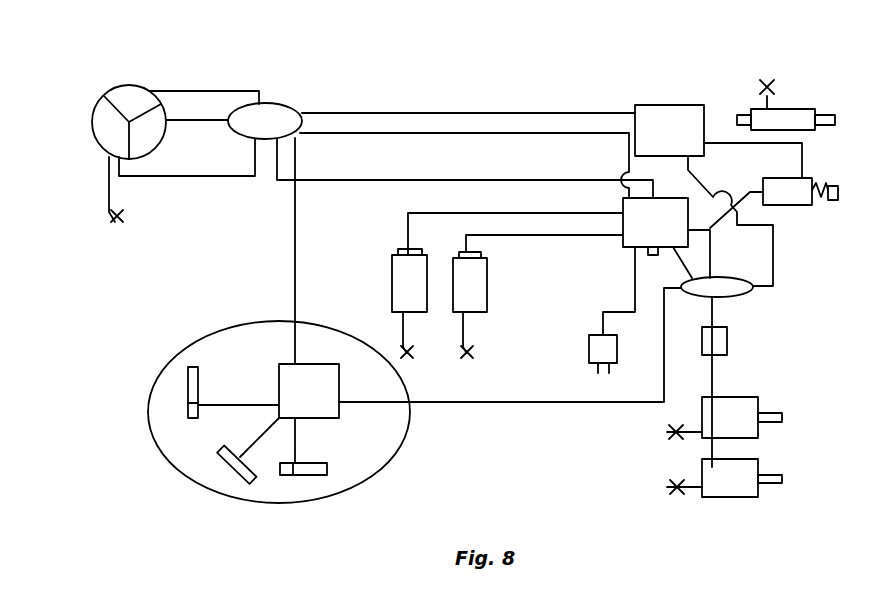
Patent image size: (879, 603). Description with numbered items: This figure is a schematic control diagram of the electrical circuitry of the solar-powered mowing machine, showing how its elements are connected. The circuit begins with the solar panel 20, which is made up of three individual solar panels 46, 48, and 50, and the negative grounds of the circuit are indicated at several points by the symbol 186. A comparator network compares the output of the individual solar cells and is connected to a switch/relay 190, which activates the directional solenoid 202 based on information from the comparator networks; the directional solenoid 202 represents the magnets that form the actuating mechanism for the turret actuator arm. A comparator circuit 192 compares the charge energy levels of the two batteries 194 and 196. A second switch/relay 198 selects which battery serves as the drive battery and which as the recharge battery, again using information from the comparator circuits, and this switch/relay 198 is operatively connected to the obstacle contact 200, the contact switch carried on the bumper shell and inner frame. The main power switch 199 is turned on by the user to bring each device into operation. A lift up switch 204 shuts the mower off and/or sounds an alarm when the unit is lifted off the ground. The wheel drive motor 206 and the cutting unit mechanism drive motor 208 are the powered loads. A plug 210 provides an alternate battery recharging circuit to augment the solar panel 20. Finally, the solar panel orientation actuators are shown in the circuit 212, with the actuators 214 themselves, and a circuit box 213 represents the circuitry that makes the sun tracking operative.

The solar panel 20 is at (108, 93).
The individual solar panel 48 is at (130, 96).
The individual solar panel 46 is at (103, 128).
The individual solar panel 50 is at (148, 137).
The negative ground 186 is at (276, 113).
The switch/relay 190 is at (648, 104).
The directional solenoid 202 is at (795, 108).
The obstacle contact 200 is at (790, 205).
The switch/relay 198 is at (623, 208).
The main power switch 199 is at (672, 283).
The comparator circuit 192 is at (742, 295).
The lift up switch 204 is at (727, 343).
The wheel drive motor 206 is at (748, 397).
The cutting unit mechanism drive motor 208 is at (745, 497).
The battery 194 is at (405, 289).
The battery 196 is at (476, 299).
The plug 210 is at (589, 343).
The solar panel orientation actuator circuit 212 is at (258, 391).
The circuit box 213 is at (318, 408).
The actuator 214 is at (187, 390).